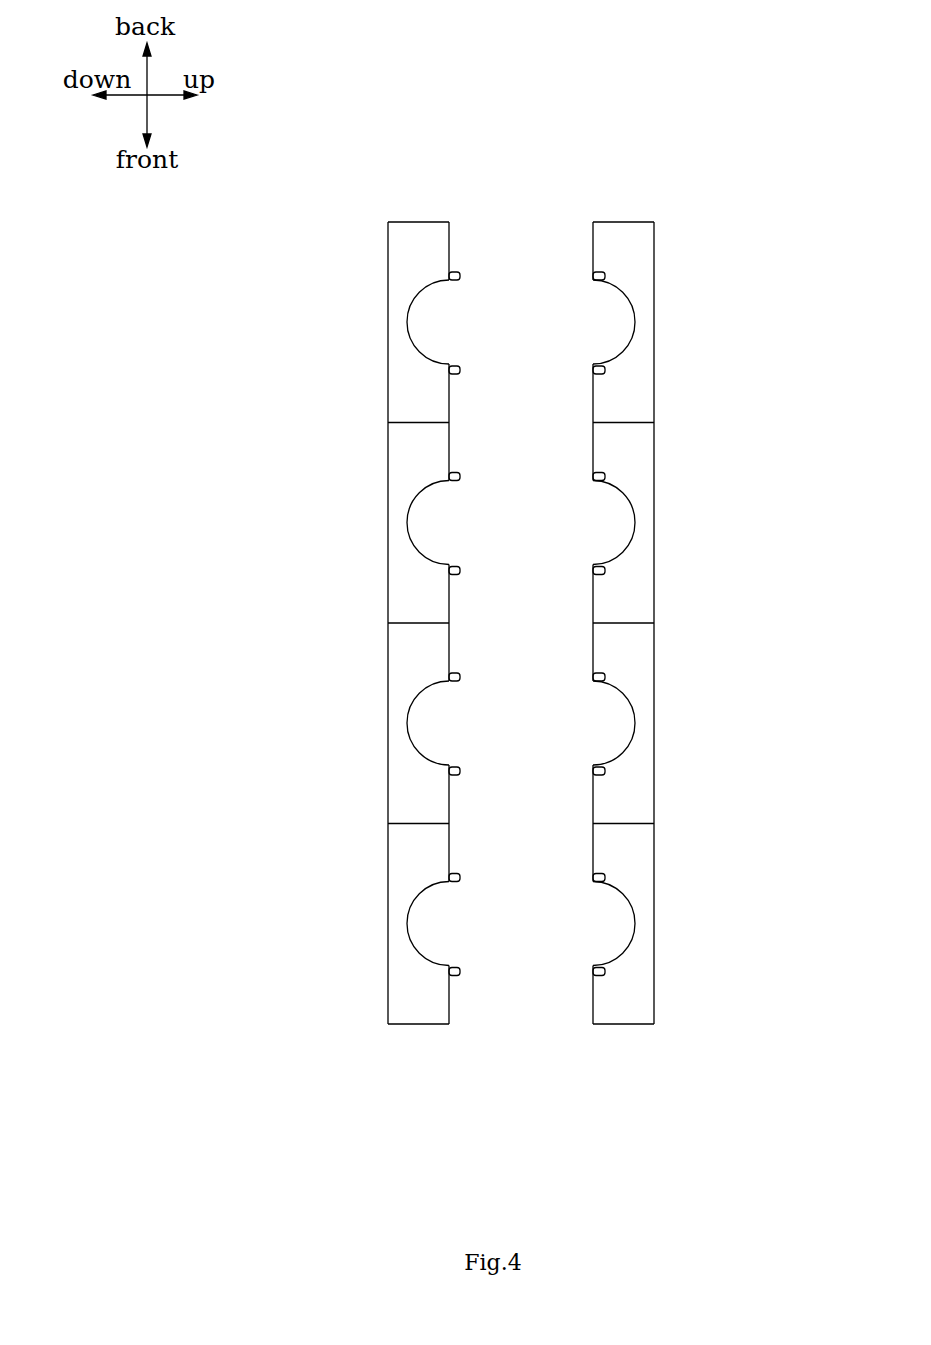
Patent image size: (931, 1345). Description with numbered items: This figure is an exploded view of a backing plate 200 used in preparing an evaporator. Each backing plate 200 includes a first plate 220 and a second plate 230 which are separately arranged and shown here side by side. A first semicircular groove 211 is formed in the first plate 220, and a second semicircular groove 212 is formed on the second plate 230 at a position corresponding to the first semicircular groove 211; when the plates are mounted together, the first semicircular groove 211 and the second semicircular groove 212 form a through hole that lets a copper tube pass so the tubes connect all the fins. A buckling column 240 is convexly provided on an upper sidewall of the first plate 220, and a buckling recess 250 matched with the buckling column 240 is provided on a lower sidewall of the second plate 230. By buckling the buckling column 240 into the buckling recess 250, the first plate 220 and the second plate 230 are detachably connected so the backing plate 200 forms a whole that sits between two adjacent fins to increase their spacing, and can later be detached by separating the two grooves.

The backing plate 200 is at (643, 100).
The first plate 220 is at (427, 237).
The second plate 230 is at (603, 240).
The first semicircular groove 211 is at (427, 322).
The second semicircular groove 212 is at (612, 327).
The buckling column 240 is at (449, 272).
The buckling recess 250 is at (607, 270).